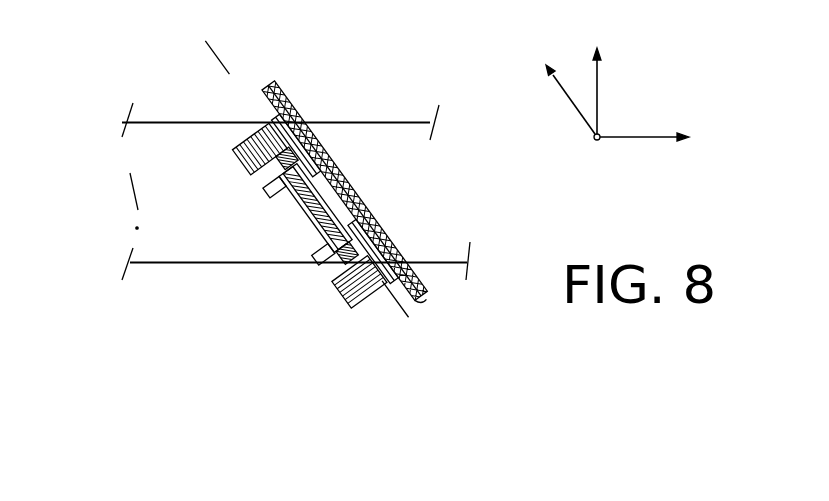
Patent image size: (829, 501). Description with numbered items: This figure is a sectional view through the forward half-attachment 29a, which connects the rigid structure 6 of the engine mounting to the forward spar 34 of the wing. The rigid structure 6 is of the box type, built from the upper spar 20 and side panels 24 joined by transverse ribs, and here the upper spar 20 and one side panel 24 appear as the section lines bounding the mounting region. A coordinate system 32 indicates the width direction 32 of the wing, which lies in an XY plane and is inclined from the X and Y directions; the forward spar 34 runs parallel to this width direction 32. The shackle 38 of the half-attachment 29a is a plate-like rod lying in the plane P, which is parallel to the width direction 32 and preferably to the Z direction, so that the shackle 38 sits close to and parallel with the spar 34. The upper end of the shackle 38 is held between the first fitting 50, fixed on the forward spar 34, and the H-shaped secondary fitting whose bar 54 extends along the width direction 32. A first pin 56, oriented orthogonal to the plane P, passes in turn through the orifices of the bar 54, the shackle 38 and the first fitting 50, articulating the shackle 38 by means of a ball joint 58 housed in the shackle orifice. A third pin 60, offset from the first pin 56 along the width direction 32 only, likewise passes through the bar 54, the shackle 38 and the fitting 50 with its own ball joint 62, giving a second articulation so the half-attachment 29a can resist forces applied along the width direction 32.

The rigid structure 6 is at (178, 257).
The upper spar 20 is at (153, 162).
The side panel 24 is at (136, 264).
The forward half-attachment 29a is at (166, 72).
The width direction 32 is at (573, 104).
The forward spar 34 is at (290, 90).
The shackle 38 is at (308, 198).
The first fitting 50 is at (317, 145).
The bar of the H 54 is at (300, 202).
The first pin 56 is at (252, 197).
The ball joint 58 is at (350, 185).
The third pin 60 is at (326, 255).
The ball joint 62 is at (366, 207).
The plane P is at (217, 57).